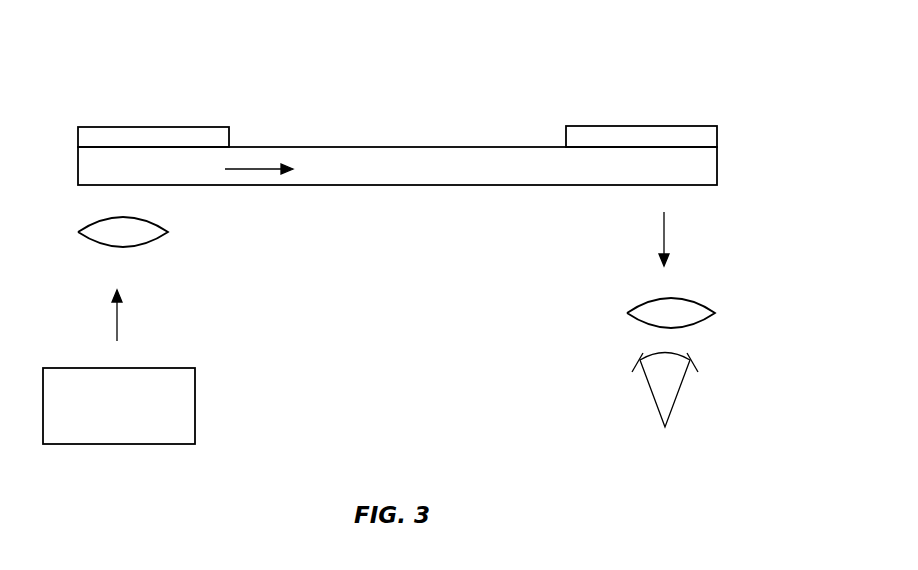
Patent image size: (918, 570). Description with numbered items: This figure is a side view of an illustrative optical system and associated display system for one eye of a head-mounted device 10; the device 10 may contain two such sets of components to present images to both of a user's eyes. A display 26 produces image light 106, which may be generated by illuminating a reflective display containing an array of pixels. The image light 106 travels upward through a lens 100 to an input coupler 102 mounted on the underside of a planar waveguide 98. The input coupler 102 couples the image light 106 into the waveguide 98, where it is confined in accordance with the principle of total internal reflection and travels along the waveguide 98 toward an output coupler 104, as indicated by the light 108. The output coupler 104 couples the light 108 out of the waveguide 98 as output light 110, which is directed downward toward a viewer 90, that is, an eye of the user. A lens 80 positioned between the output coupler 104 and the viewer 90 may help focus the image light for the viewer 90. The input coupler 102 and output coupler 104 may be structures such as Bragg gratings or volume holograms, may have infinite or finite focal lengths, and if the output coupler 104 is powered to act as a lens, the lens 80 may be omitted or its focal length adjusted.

The device 10 is at (722, 72).
The display 26 is at (189, 408).
The lens 80 is at (708, 308).
The viewer 90 is at (675, 398).
The waveguide 98 is at (397, 153).
The lens 100 is at (160, 238).
The input coupler 102 is at (155, 132).
The output coupler 104 is at (642, 132).
The image light 106 is at (117, 323).
The light 108 is at (253, 171).
The output light 110 is at (664, 233).